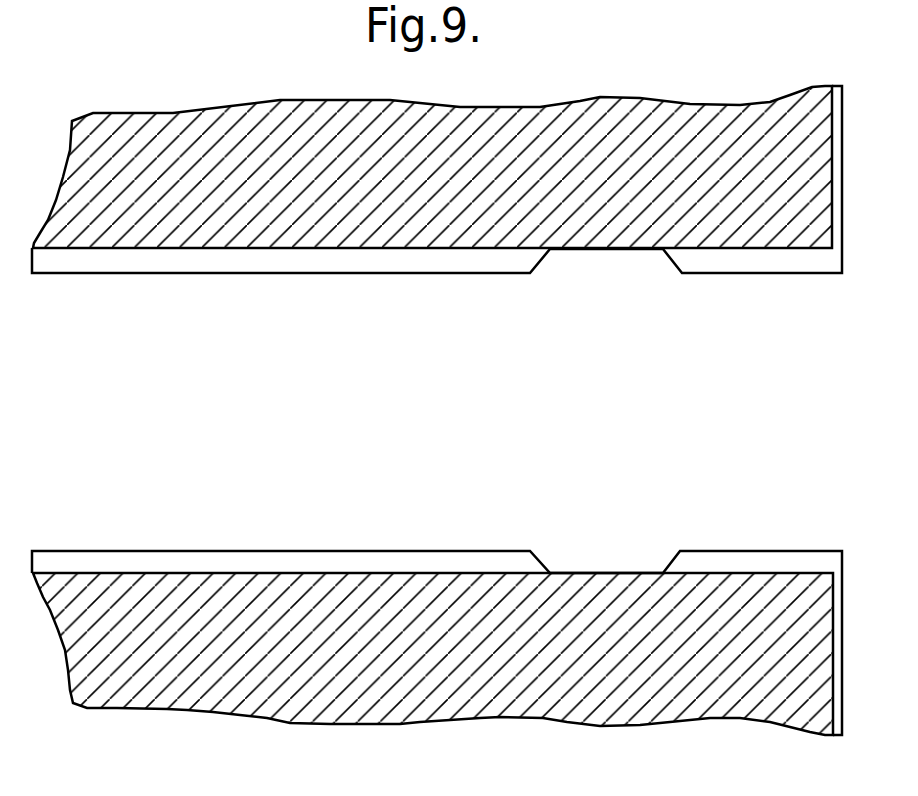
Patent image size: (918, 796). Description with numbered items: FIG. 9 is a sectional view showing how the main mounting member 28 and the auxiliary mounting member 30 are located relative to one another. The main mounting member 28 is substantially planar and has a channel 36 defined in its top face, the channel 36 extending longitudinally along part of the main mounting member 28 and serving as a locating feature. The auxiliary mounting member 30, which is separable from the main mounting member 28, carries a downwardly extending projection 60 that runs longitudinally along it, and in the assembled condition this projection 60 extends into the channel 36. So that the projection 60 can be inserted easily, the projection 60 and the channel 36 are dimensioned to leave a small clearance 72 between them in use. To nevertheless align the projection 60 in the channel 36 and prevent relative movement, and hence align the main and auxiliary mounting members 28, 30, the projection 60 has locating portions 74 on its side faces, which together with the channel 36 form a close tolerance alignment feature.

The projection 60 is at (767, 432).
The main mounting member 28 is at (357, 250).
The auxiliary mounting member 30 is at (362, 551).
The channel 36 is at (75, 262).
The clearance 72 is at (60, 563).
The locating portions 74 is at (627, 249).